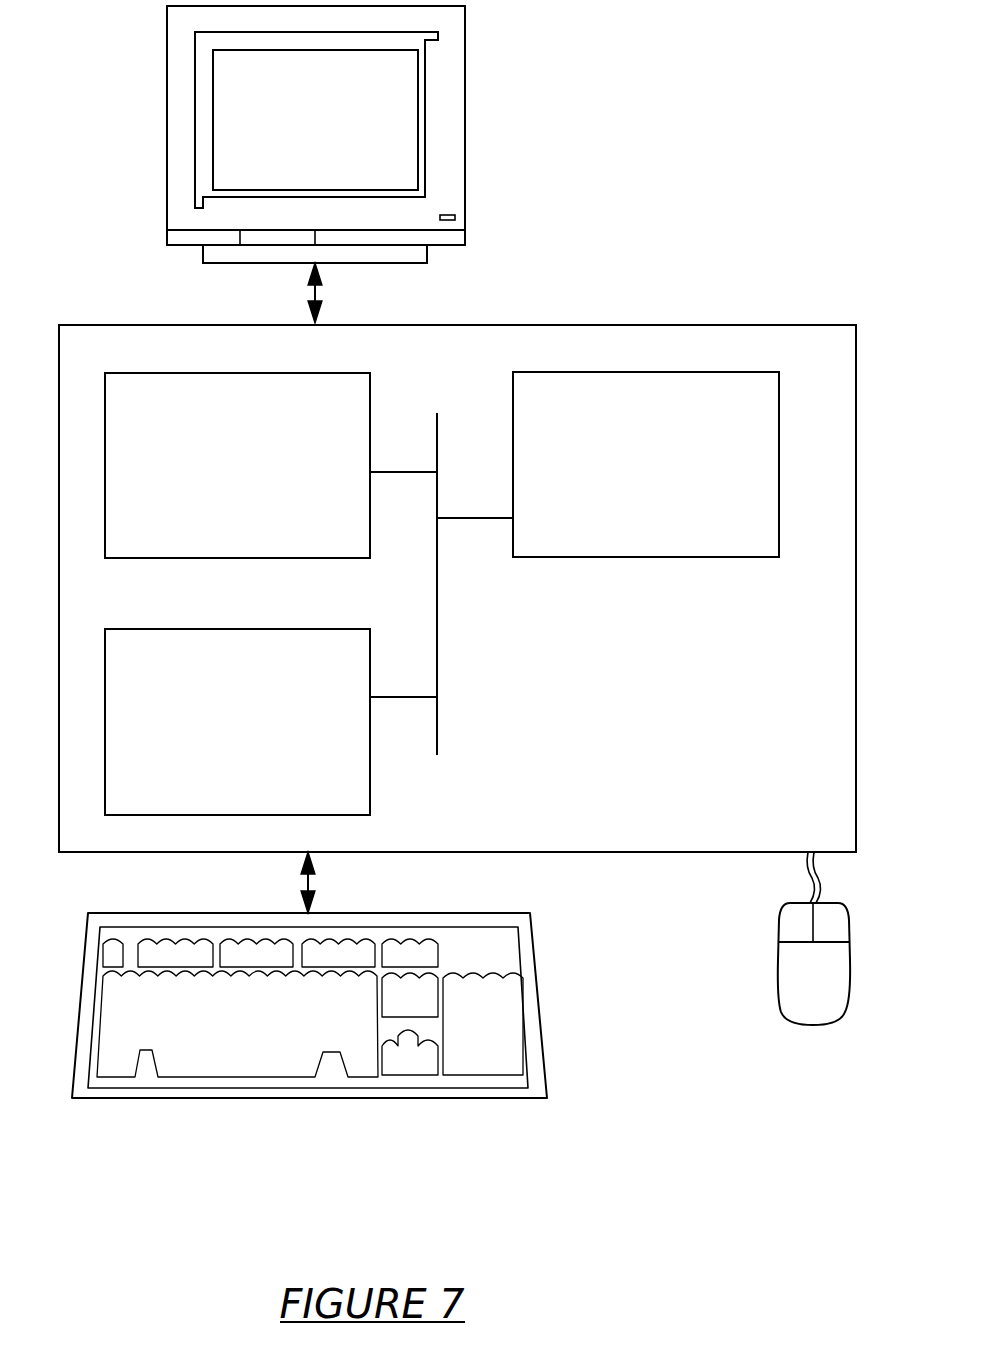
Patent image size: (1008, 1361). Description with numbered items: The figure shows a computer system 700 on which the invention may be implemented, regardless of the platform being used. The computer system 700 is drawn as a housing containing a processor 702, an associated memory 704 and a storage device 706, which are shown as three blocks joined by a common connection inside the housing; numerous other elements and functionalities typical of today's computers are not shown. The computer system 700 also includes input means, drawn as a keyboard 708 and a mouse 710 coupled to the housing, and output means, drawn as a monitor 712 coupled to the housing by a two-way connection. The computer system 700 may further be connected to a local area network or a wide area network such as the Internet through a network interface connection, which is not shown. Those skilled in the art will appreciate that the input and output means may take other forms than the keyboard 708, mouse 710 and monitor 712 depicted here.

The computer system 700 is at (706, 194).
The processor 702 is at (623, 478).
The memory 704 is at (213, 479).
The storage device 706 is at (213, 732).
The keyboard 708 is at (222, 1037).
The mouse 710 is at (788, 991).
The monitor 712 is at (290, 137).